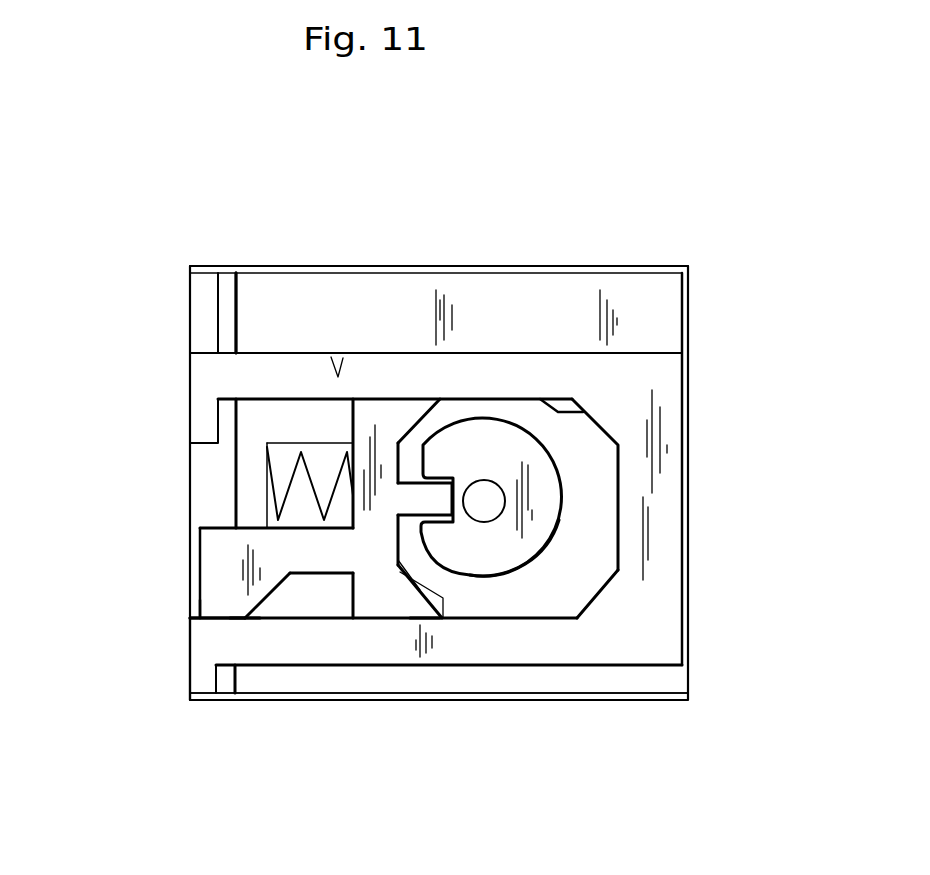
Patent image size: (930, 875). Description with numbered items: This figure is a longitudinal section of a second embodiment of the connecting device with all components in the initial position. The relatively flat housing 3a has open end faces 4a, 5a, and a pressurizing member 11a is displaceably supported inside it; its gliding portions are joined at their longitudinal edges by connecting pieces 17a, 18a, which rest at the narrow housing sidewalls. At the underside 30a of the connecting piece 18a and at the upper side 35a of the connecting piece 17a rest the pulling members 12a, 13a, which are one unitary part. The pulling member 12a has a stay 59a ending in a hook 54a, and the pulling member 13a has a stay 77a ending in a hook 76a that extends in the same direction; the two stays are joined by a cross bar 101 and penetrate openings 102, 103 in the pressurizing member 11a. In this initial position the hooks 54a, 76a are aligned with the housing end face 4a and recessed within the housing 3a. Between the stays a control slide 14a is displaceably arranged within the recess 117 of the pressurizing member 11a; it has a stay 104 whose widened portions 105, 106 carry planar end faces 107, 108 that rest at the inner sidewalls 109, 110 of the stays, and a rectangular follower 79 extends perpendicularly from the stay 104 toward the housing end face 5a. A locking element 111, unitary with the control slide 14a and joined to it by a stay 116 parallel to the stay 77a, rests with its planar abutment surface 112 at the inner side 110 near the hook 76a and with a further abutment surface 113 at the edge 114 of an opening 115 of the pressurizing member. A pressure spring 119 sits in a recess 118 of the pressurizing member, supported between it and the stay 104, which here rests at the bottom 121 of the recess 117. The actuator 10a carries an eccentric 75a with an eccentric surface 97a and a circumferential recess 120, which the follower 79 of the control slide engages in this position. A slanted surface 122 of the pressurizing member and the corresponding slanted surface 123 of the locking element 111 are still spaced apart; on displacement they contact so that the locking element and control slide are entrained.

The open end face 4a is at (190, 305).
The housing 3a is at (607, 268).
The open end face 5a is at (688, 372).
The connecting piece 17a is at (652, 687).
The hook 76a is at (197, 665).
The pulling member 12a is at (470, 382).
The stay 59a is at (258, 365).
The connecting piece 18a is at (278, 297).
The pressurizing member 11a is at (424, 300).
The underside 30a is at (633, 368).
The widened portion 105 is at (400, 414).
The inner sidewall 109 is at (560, 412).
The cross bar 101 is at (660, 515).
The recess 117 is at (603, 537).
The eccentric surface 97a is at (535, 557).
The inner sidewall 110 is at (543, 613).
The hook 54a is at (205, 421).
The pressure spring 119 is at (302, 455).
The recess 118 is at (322, 455).
The edge 114 is at (255, 525).
The abutment surface 113 is at (240, 522).
The locking element 111 is at (232, 557).
The opening 115 is at (218, 615).
The abutment surface 112 is at (218, 617).
The slanted surface 123 is at (243, 617).
The slanted surface 122 is at (283, 588).
The stay 116 is at (305, 565).
The opening 103 is at (307, 613).
The upper side 35a is at (538, 657).
The stay 77a is at (315, 647).
The pulling member 13a is at (392, 651).
The planar end face 107 is at (375, 397).
The opening 102 is at (338, 377).
The bottom 121 is at (363, 430).
The stay 104 is at (377, 432).
The tongue 79 is at (440, 507).
The control slide 14a is at (395, 566).
The widened portion 106 is at (398, 603).
The planar end face 108 is at (423, 610).
The eccentric 75a is at (540, 497).
The circumferential recess 120 is at (452, 477).
The actuator 10a is at (553, 545).